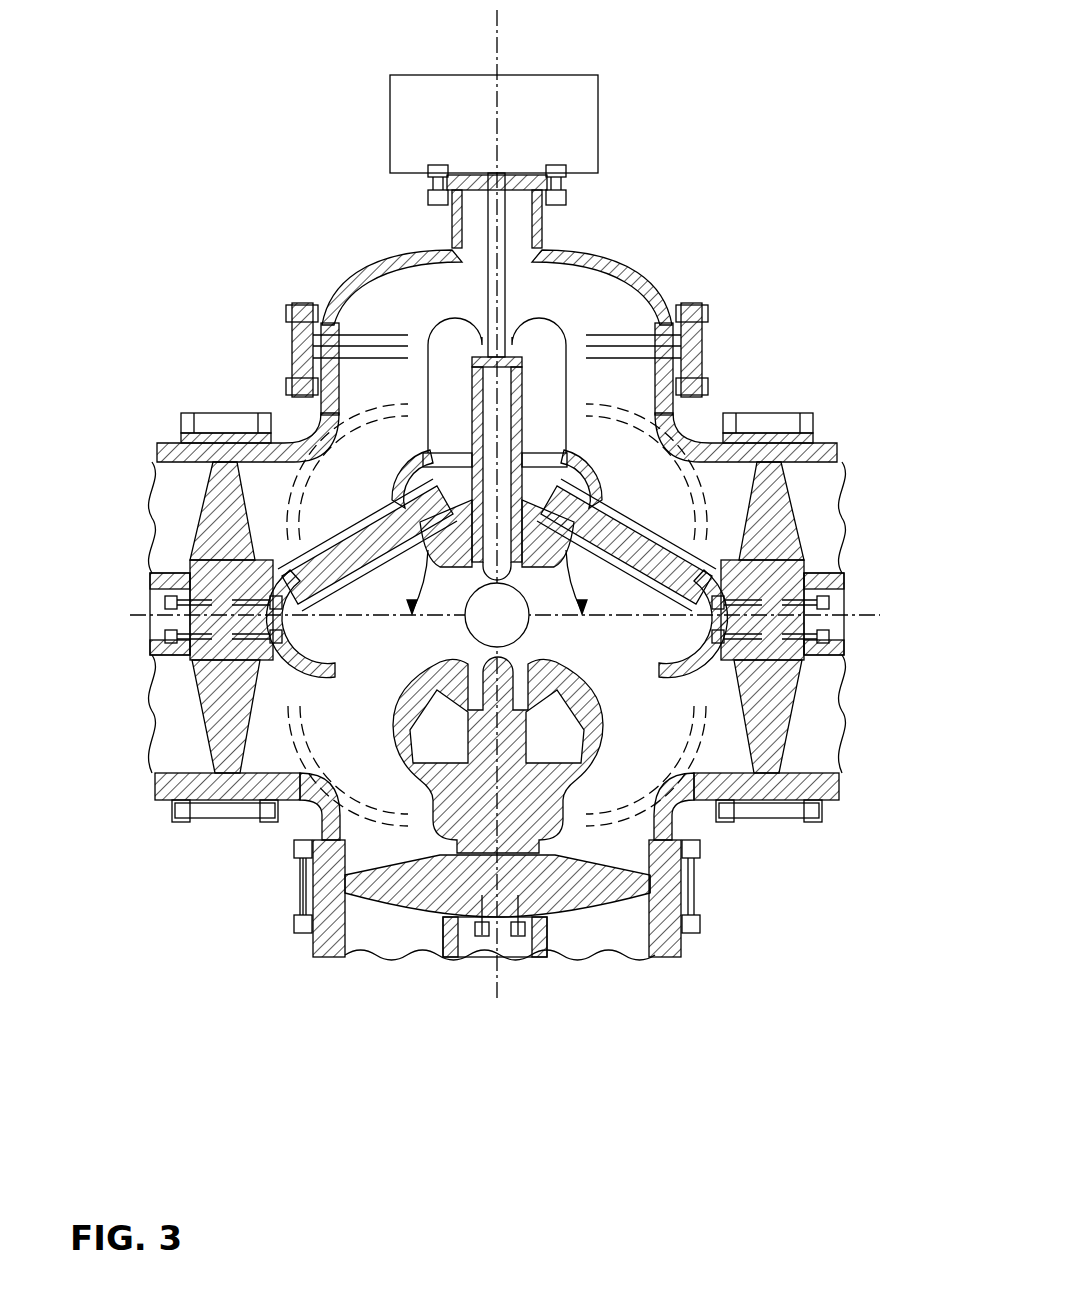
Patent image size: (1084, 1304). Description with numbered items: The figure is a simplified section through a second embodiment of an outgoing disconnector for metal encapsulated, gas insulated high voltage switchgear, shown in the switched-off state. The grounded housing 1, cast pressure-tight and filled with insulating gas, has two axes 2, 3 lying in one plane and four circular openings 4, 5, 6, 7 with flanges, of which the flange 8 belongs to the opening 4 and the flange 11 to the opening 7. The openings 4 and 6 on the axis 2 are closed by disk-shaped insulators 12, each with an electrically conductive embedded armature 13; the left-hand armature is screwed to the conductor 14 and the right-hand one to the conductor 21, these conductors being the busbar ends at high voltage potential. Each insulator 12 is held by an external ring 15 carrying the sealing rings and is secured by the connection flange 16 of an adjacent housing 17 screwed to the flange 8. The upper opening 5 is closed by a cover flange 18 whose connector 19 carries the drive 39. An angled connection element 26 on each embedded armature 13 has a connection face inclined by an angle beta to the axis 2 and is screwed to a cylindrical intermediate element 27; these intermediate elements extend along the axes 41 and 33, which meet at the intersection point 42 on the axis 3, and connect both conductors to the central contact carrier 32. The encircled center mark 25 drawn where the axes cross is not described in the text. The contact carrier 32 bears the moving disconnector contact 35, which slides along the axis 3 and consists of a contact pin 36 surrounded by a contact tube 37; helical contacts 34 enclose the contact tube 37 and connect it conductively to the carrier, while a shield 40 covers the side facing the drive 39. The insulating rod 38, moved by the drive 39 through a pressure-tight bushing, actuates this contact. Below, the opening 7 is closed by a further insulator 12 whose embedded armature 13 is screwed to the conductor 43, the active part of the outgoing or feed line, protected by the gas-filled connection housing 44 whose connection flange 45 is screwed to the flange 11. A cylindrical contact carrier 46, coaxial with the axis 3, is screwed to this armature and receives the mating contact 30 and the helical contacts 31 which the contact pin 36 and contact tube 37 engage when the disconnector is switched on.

The housing 1 is at (680, 793).
The axis 2 is at (858, 612).
The axis 3 is at (500, 21).
The opening 4 is at (334, 472).
The opening 5 is at (646, 455).
The opening 6 is at (661, 766).
The opening 7 is at (491, 783).
The flange 8 is at (242, 410).
The flange 11 is at (300, 866).
The insulator 12 is at (235, 718).
The embedded armature 13 is at (230, 676).
The conductor 14 is at (160, 657).
The external ring 15 is at (222, 803).
The connection flange 16 is at (218, 800).
The adjacent housing 17 is at (185, 790).
The cover flange 18 is at (640, 280).
The connector 19 is at (542, 225).
The conductor 21 is at (826, 656).
The rotation center 25 is at (497, 598).
The angled connection element 26 is at (192, 550).
The intermediate element 27 is at (335, 555).
The mating contact 30 is at (522, 660).
The helical contacts 31 is at (553, 675).
The contact carrier 32 is at (775, 452).
The axis 33 is at (637, 520).
The helical contacts 34 is at (395, 492).
The moving disconnector contact 35 is at (557, 420).
The contact pin 36 is at (470, 392).
The contact tube 37 is at (450, 320).
The insulating rod 38 is at (491, 283).
The drive 39 is at (548, 97).
The shield 40 is at (486, 318).
The axis 41 is at (345, 533).
The intersection point 42 is at (522, 452).
The conductor 43 is at (540, 957).
The connection housing 44 is at (338, 957).
The connection flange 45 is at (293, 917).
The contact carrier 46 is at (603, 957).